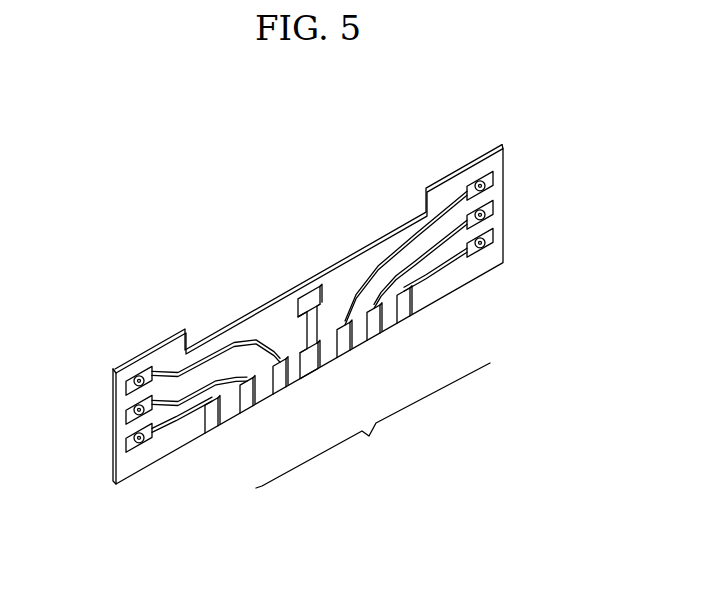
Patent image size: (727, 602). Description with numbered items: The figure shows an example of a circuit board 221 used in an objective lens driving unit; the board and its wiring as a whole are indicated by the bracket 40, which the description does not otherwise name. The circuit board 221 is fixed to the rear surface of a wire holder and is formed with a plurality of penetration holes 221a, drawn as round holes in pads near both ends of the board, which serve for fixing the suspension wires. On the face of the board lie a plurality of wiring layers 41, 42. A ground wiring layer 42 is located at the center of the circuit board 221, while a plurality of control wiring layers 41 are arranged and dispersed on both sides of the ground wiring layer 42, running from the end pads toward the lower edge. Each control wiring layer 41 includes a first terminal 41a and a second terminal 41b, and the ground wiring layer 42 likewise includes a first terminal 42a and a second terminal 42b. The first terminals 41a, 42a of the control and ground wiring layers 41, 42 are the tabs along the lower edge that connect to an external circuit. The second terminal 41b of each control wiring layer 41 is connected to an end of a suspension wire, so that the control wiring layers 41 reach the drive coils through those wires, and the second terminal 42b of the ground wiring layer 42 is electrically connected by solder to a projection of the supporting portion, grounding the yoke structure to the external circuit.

The flexible printed circuit board 40 is at (373, 425).
The circuit board 221 is at (505, 148).
The penetration holes 221a is at (144, 385).
The control wiring layers 41 is at (200, 405).
The first terminal 41a is at (458, 327).
The second terminal 41b is at (150, 374).
The ground wiring layer 42 is at (302, 315).
The first terminal 42a is at (312, 367).
The second terminal 42b is at (310, 286).